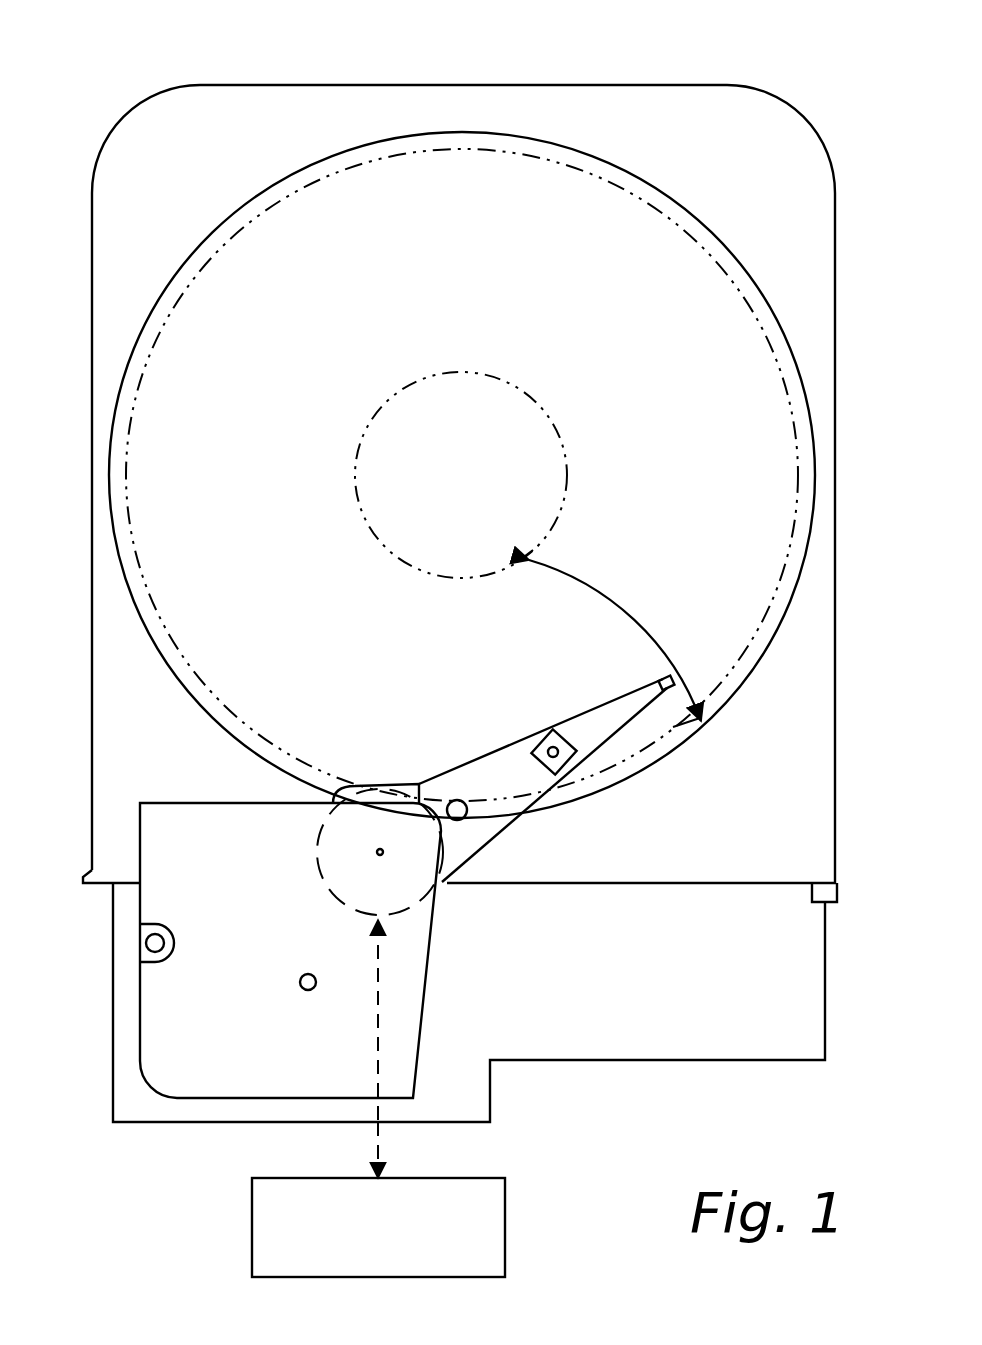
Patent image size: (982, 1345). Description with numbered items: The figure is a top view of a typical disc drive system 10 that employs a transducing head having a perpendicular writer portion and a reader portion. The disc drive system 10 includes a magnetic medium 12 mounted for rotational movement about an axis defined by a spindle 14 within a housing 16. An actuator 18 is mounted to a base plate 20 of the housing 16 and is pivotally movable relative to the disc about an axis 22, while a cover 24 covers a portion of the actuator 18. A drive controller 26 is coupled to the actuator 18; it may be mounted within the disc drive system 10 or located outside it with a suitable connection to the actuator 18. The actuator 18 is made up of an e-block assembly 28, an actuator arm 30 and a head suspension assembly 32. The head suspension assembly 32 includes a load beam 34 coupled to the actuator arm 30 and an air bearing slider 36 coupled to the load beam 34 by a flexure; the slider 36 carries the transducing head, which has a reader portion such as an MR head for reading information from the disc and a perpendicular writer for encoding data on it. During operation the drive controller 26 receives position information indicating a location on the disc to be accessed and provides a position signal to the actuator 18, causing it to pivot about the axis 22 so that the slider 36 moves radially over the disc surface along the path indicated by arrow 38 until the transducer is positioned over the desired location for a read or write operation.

The disc drive system 10 is at (459, 60).
The magnetic medium 12 is at (462, 475).
The spindle 14 is at (461, 475).
The housing 16 is at (835, 250).
The actuator 18 is at (527, 733).
The base plate 20 is at (560, 1062).
The axis 22 is at (380, 852).
The cover 24 is at (185, 905).
The drive controller 26 is at (505, 1217).
The e-block assembly 28 is at (383, 783).
The actuator arm 30 is at (485, 843).
The head suspension assembly 32 is at (606, 695).
The load beam 34 is at (555, 728).
The air bearing slider 36 is at (677, 680).
The arrow 38 is at (592, 590).